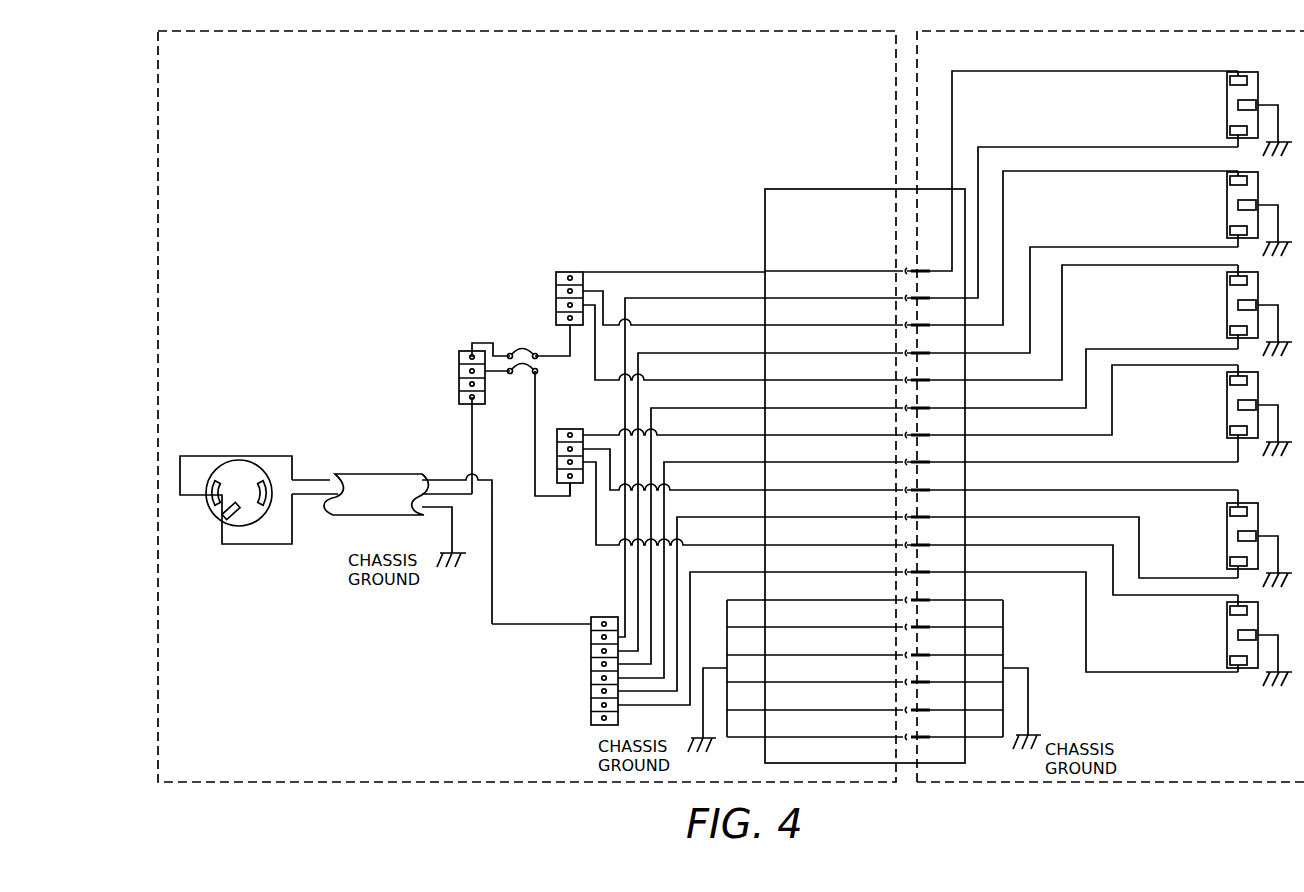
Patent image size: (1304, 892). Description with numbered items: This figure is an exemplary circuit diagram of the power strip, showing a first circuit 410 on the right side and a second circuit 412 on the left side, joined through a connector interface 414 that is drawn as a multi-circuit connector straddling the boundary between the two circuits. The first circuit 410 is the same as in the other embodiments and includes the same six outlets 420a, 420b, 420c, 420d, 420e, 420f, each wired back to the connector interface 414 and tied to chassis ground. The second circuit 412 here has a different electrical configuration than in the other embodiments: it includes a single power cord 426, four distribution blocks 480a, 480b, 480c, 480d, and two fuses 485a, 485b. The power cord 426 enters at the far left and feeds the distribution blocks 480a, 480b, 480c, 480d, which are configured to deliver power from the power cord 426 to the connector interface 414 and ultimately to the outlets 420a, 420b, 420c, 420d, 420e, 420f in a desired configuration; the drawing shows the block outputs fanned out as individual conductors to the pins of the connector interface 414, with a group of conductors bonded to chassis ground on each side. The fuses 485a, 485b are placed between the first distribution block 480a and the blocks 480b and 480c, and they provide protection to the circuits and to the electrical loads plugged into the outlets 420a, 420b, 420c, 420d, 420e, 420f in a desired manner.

The first circuit 410 is at (1287, 61).
The second circuit 412 is at (882, 61).
The connector interface 414 is at (765, 232).
The outlet 420a is at (1227, 105).
The outlet 420b is at (1227, 205).
The outlet 420c is at (1227, 305).
The outlet 420d is at (1227, 405).
The outlet 420e is at (1227, 536).
The outlet 420f is at (1227, 635).
The power cord 426 is at (236, 456).
The distribution block 480a is at (462, 352).
The distribution block 480b is at (570, 271).
The distribution block 480c is at (570, 428).
The distribution block 480d is at (602, 616).
The fuse 485a is at (522, 351).
The fuse 485b is at (522, 378).